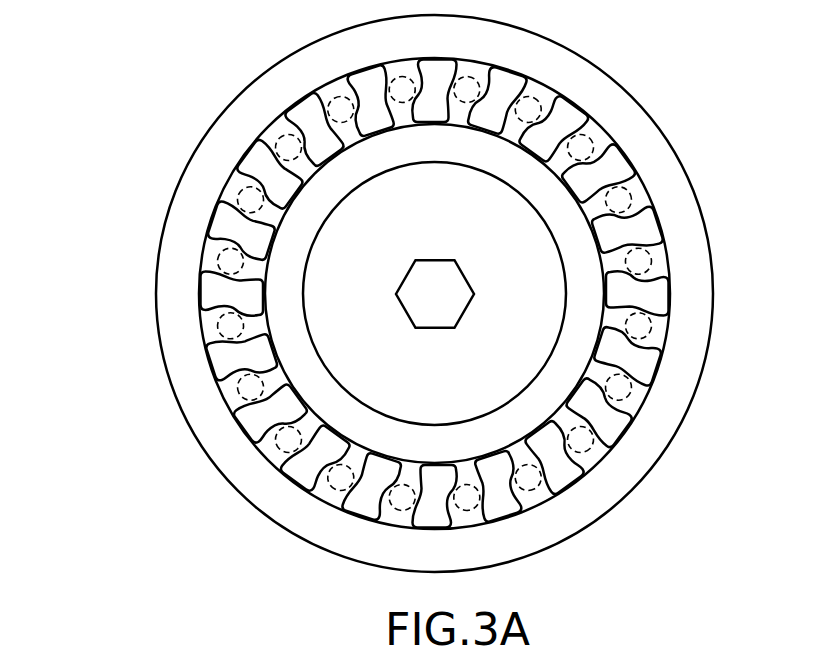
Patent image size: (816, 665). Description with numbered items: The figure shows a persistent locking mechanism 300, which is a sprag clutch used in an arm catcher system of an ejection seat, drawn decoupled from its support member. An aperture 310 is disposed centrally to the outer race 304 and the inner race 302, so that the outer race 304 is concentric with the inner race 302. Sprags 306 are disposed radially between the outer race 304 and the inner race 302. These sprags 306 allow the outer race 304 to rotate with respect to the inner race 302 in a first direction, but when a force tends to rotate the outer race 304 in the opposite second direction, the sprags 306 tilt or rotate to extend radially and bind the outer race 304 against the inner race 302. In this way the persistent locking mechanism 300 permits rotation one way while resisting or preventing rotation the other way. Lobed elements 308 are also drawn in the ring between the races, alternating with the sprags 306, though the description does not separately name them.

The persistent locking mechanism 300 is at (158, 90).
The inner race 302 is at (287, 300).
The outer race 304 is at (647, 142).
The sprags 306 is at (287, 143).
The lobed element 308 is at (613, 423).
The aperture 310 is at (445, 278).